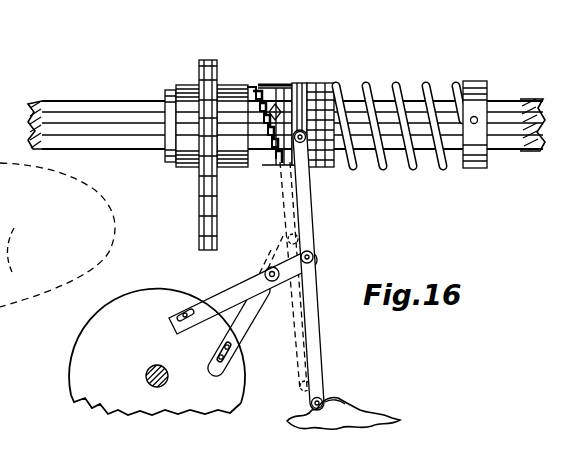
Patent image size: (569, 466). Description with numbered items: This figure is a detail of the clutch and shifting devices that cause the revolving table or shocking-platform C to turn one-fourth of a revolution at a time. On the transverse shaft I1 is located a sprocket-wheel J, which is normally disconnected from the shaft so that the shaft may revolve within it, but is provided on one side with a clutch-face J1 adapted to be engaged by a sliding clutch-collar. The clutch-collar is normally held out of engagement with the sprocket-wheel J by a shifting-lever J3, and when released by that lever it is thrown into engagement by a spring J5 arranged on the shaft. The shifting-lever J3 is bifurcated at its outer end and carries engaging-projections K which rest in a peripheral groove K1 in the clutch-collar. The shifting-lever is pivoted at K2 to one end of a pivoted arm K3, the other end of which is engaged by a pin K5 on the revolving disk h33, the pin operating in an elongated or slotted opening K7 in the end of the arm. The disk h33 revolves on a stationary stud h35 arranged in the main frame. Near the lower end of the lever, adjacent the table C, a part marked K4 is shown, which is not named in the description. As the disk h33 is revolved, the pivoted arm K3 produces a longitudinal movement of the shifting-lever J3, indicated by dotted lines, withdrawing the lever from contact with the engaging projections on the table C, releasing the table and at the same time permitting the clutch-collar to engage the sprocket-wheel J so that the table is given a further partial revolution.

The transverse shaft I1 is at (103, 100).
The sprocket-wheel J is at (187, 83).
The clutch-face J1 is at (233, 82).
The shifting-lever J3 is at (314, 233).
The spring J5 is at (397, 83).
The engaging-projections K is at (300, 137).
The peripheral groove K1 is at (302, 83).
The pivot K2 is at (313, 255).
The pivoted arm K3 is at (227, 293).
The lug K4 is at (335, 410).
The pin K5 is at (180, 310).
The slotted opening K7 is at (176, 313).
The revolving disk h33 is at (157, 352).
The stationary stud h35 is at (146, 378).
The revolving table or shocking-platform C is at (395, 420).